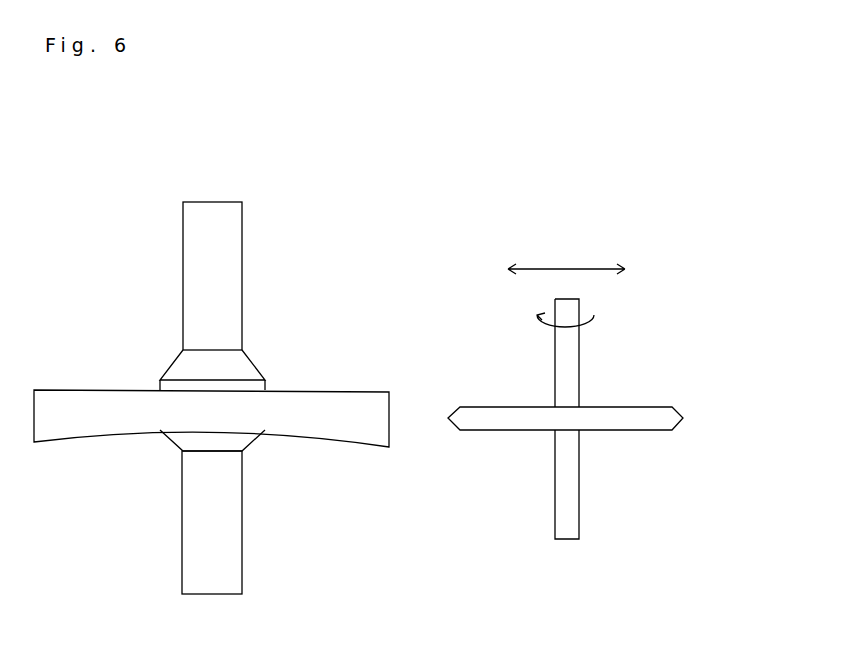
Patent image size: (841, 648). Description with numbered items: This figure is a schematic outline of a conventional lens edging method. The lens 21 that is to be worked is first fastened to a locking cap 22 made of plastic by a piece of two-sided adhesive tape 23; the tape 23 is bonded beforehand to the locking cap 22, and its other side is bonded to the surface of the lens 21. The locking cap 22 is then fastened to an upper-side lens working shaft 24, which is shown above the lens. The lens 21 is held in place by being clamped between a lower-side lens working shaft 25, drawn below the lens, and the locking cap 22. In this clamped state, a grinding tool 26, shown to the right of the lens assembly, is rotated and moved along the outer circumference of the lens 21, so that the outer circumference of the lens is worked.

The lens 21 is at (350, 396).
The locking cap 22 is at (250, 360).
The two-sided adhesive tape 23 is at (275, 388).
The upper-side lens working shaft 24 is at (235, 250).
The lower-side lens working shaft 25 is at (233, 512).
The grinding tool 26 is at (648, 418).